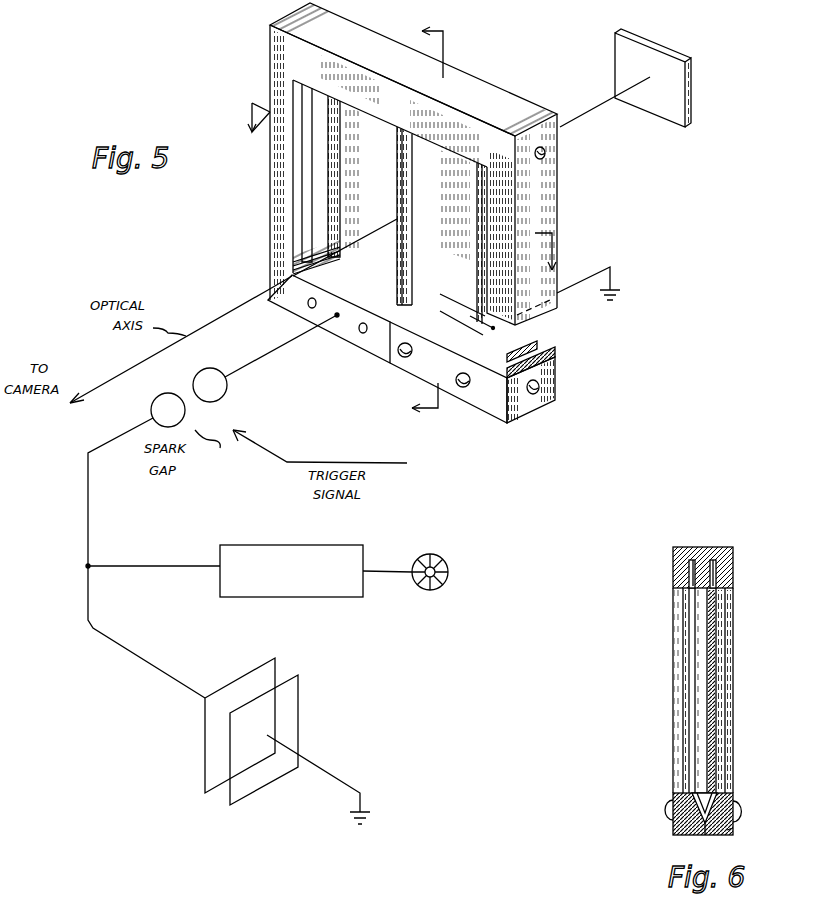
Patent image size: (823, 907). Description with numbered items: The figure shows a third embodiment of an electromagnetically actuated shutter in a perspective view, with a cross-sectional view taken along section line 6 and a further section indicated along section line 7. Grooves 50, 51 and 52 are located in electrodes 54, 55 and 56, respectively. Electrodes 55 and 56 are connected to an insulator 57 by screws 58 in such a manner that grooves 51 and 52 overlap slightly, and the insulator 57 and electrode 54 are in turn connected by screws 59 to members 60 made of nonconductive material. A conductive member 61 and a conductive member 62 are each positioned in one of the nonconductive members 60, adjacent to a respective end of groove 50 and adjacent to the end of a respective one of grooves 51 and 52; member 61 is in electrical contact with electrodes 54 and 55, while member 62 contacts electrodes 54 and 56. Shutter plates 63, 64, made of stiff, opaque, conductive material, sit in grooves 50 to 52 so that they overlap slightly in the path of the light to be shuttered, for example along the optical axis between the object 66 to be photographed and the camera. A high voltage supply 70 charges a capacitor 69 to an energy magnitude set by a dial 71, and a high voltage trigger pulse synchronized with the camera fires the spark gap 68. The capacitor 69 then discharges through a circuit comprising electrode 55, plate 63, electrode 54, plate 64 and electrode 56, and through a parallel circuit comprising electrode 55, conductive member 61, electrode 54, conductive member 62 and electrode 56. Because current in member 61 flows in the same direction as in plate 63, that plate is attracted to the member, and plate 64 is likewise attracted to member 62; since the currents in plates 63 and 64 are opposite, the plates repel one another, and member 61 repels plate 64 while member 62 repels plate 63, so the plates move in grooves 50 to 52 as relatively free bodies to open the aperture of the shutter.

In FIG. 5, the section line 6— 6 is at (421, 209).
In FIG. 5, the section line 7— 7 is at (398, 200).
In FIG. 6, the groove 50 is at (713, 547).
In FIG. 5, the groove 51 is at (292, 300).
In FIG. 5, the groove 52 is at (510, 337).
In FIG. 6, the groove 52 is at (712, 838).
In FIG. 5, the electrode 54 is at (487, 82).
In FIG. 6, the electrode 54 is at (673, 575).
In FIG. 5, the electrode 55 is at (322, 333).
In FIG. 5, the electrode 56 is at (495, 330).
In FIG. 6, the electrode 56 is at (733, 830).
In FIG. 5, the insulator 57 is at (397, 372).
In FIG. 6, the insulator 57 is at (685, 838).
In FIG. 5, the screws 58 is at (308, 308).
In FIG. 6, the screws 58 is at (665, 812).
In FIG. 5, the screws 59 is at (548, 153).
In FIG. 5, the members 60 is at (277, 77).
In FIG. 6, the members 60 is at (673, 645).
In FIG. 5, the conductive member 61 is at (307, 204).
In FIG. 6, the conductive member 61 is at (683, 680).
In FIG. 5, the conductive member 62 is at (545, 360).
In FIG. 5, the shutter plate 63 is at (360, 128).
In FIG. 6, the shutter plate 63 is at (690, 722).
In FIG. 5, the shutter plate 64 is at (435, 160).
In FIG. 6, the shutter plate 64 is at (716, 712).
In FIG. 5, the object 66 is at (655, 128).
In FIG. 5, the spark gap 68 is at (205, 397).
In FIG. 5, the capacitor 69 is at (287, 741).
In FIG. 5, the high voltage supply 70 is at (325, 597).
In FIG. 5, the dial 71 is at (448, 568).